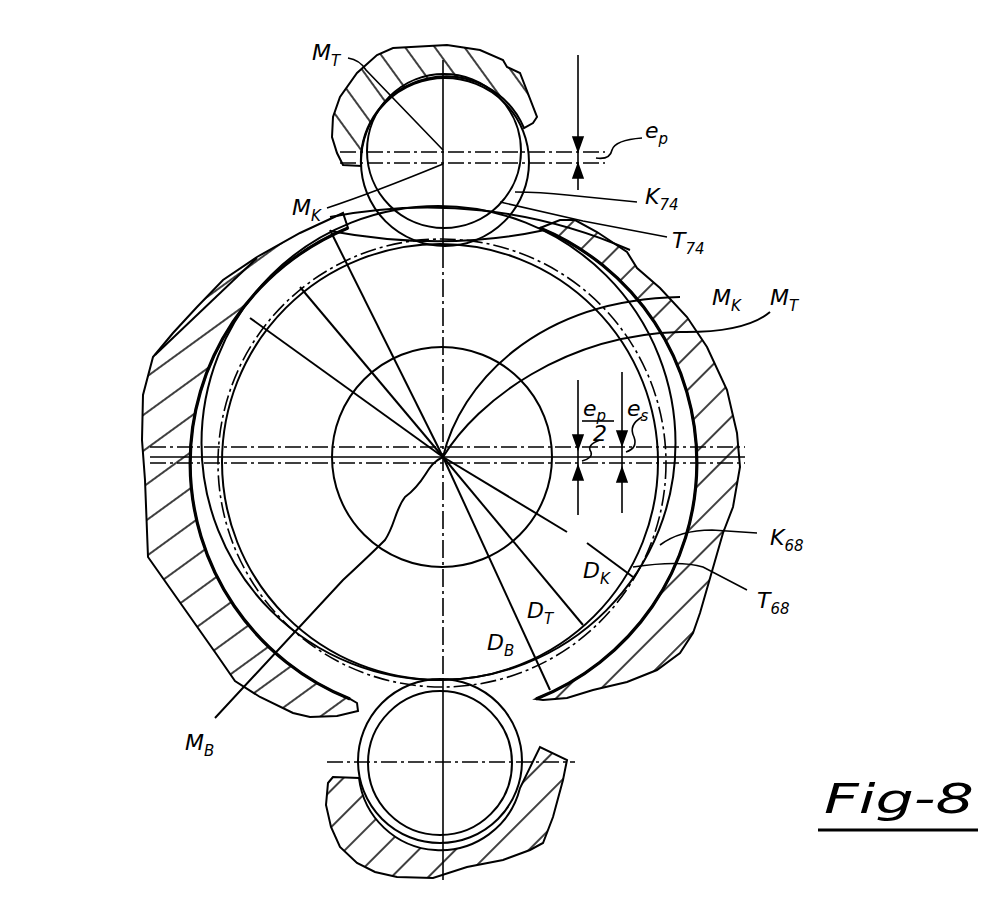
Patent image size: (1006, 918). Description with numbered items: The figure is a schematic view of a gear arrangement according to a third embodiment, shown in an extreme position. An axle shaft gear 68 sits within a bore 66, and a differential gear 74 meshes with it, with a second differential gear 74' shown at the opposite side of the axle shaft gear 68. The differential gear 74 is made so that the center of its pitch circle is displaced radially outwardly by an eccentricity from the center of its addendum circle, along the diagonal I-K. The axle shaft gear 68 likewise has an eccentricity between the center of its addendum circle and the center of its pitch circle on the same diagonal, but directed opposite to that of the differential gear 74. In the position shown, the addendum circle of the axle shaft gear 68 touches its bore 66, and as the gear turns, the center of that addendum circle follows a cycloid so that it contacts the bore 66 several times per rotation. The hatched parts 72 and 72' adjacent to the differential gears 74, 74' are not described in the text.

The bore 66 is at (683, 393).
The axle shaft gear 68 is at (660, 427).
The bearing shell (upper) 72 is at (450, 105).
The differential gear 74 is at (455, 131).
The bearing shell (lower) 72' is at (476, 812).
The bearing pin (lower) 74' is at (500, 761).